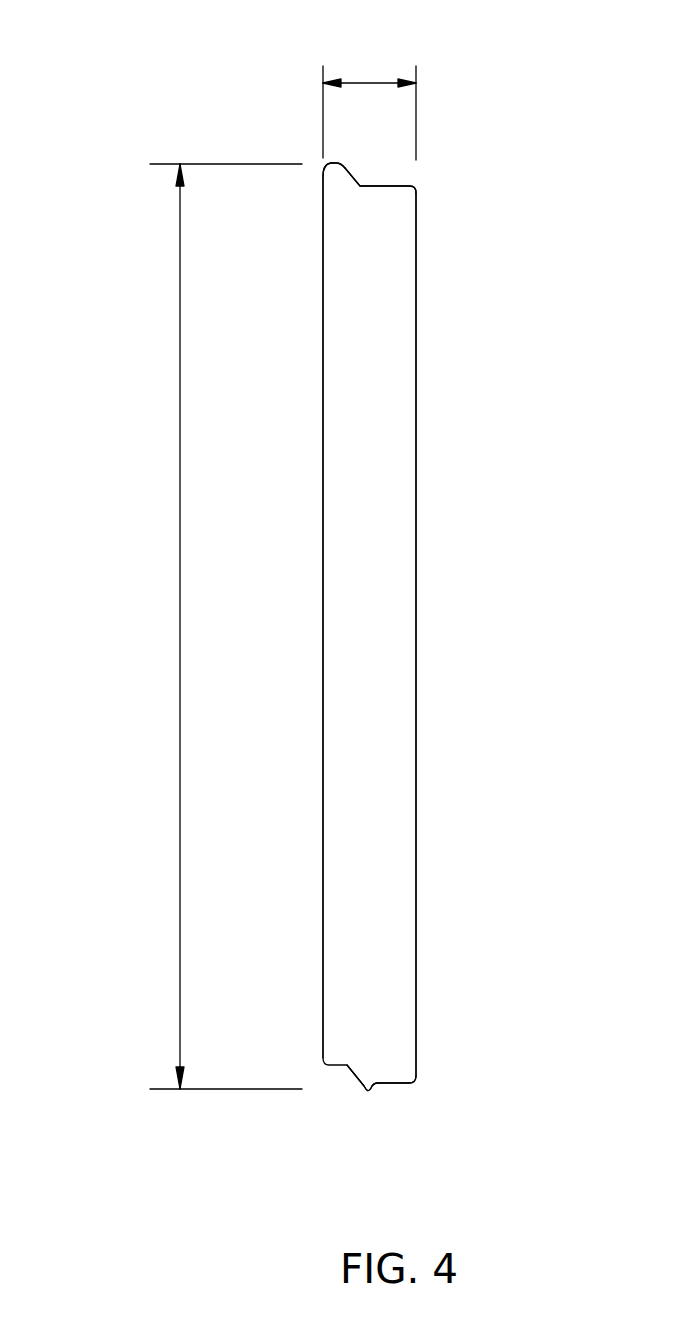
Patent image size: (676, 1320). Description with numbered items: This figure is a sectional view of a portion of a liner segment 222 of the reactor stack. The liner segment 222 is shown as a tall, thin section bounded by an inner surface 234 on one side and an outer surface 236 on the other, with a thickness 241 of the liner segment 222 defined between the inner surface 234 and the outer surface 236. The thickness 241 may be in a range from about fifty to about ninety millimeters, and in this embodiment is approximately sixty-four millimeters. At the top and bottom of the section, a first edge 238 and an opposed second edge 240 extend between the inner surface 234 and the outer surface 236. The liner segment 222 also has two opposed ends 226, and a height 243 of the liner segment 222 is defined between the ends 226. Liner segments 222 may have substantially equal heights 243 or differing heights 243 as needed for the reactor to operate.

The liner segment 222 is at (376, 813).
The opposed ends 226 is at (330, 164).
The inner surface 234 is at (322, 310).
The outer surface 236 is at (417, 335).
The first edge 238 is at (385, 186).
The second edge 240 is at (403, 1085).
The thickness 241 is at (367, 80).
The height 243 is at (180, 514).